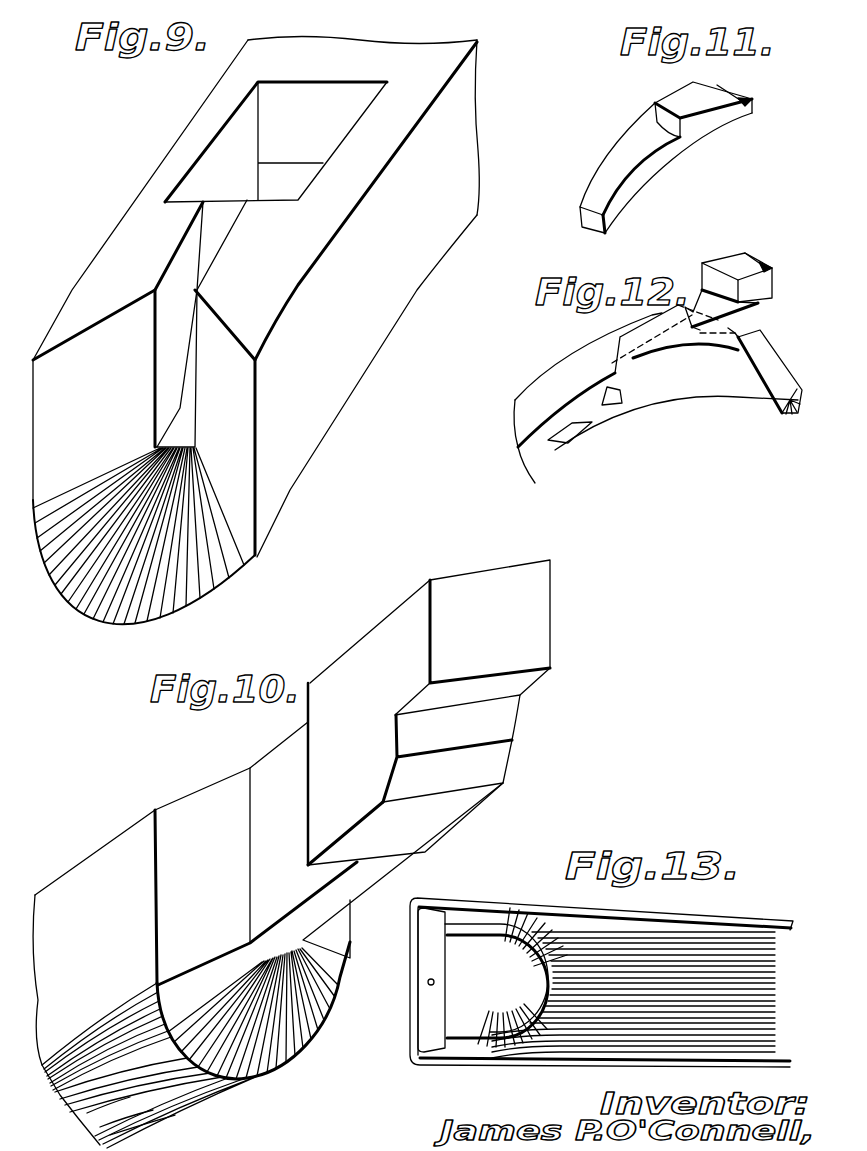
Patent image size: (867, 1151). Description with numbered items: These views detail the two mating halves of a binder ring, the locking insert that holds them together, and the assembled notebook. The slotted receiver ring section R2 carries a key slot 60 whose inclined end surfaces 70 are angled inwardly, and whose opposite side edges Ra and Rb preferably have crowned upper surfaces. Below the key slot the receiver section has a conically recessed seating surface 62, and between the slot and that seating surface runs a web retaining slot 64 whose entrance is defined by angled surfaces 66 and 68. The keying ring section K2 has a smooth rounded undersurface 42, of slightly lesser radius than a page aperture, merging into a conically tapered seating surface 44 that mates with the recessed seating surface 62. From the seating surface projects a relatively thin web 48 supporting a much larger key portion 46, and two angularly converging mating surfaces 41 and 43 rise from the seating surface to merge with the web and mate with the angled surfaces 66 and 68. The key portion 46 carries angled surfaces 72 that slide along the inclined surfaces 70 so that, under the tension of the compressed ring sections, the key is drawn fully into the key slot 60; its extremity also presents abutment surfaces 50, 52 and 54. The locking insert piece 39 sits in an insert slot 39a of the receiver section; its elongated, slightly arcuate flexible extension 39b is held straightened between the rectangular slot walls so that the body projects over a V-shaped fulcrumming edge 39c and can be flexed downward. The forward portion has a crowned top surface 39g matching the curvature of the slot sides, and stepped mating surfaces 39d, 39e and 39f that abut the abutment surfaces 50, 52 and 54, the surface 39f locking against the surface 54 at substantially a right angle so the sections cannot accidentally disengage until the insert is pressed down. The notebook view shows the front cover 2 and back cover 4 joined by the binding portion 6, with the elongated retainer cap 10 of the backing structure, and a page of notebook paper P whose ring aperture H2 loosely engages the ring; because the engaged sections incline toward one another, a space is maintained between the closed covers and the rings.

In FIG. 13, the front cover 2 is at (726, 922).
In FIG. 13, the back cover 4 is at (527, 1062).
In FIG. 13, the binding portion 6 is at (416, 958).
In FIG. 13, the elongated retainer cap 10 is at (432, 1013).
In FIG. 11, the locking insert piece 39 is at (712, 127).
In FIG. 12, the locking insert piece 39 is at (750, 305).
In FIG. 9, the insert slot 39a is at (292, 185).
In FIG. 12, the insert slot 39a is at (570, 440).
In FIG. 11, the flexible extension 39b is at (620, 210).
In FIG. 12, the V-shaped fulcrumming edge 39c is at (597, 420).
In FIG. 11, the stepped mating surface 39d is at (736, 92).
In FIG. 12, the stepped mating surface 39d is at (752, 262).
In FIG. 11, the stepped mating surface 39e is at (754, 100).
In FIG. 12, the stepped mating surface 39e is at (772, 268).
In FIG. 11, the stepped mating surface 39f is at (755, 108).
In FIG. 12, the stepped mating surface 39f is at (772, 287).
In FIG. 11, the crowned top surface 39g is at (677, 99).
In FIG. 12, the crowned top surface 39g is at (712, 262).
In FIG. 10, the mating surface 41 is at (195, 806).
In FIG. 10, the rounded undersurface 42 is at (158, 1118).
In FIG. 10, the mating surface 43 is at (333, 935).
In FIG. 10, the conically tapered seating surface 44 is at (276, 1042).
In FIG. 10, the key portion 46 is at (478, 565).
In FIG. 10, the web 48 is at (272, 760).
In FIG. 10, the abutment surface 50 is at (535, 607).
In FIG. 10, the abutment surface 52 is at (520, 697).
In FIG. 10, the abutment surface 54 is at (495, 724).
In FIG. 9, the key slot 60 is at (348, 98).
In FIG. 12, the key slot 60 is at (722, 336).
In FIG. 9, the recessed seating surface 62 is at (104, 572).
In FIG. 9, the web retaining slot 64 is at (213, 233).
In FIG. 9, the angled surface 66 is at (65, 365).
In FIG. 9, the angled surface 68 is at (237, 416).
In FIG. 9, the inclined end surface 70 is at (262, 192).
In FIG. 10, the angled surface 72 is at (312, 870).
In FIG. 9, the slotted receiver ring section R2 is at (350, 355).
In FIG. 12, the slotted receiver ring section R2 is at (683, 388).
In FIG. 13, the slotted receiver ring section R2 is at (480, 920).
In FIG. 9, the side edge of key slot Ra is at (362, 135).
In FIG. 9, the side edge of key slot Rb is at (207, 108).
In FIG. 10, the keying ring section K2 is at (72, 880).
In FIG. 13, the ring aperture H2 is at (472, 1040).
In FIG. 13, the page of notebook paper P is at (768, 1057).